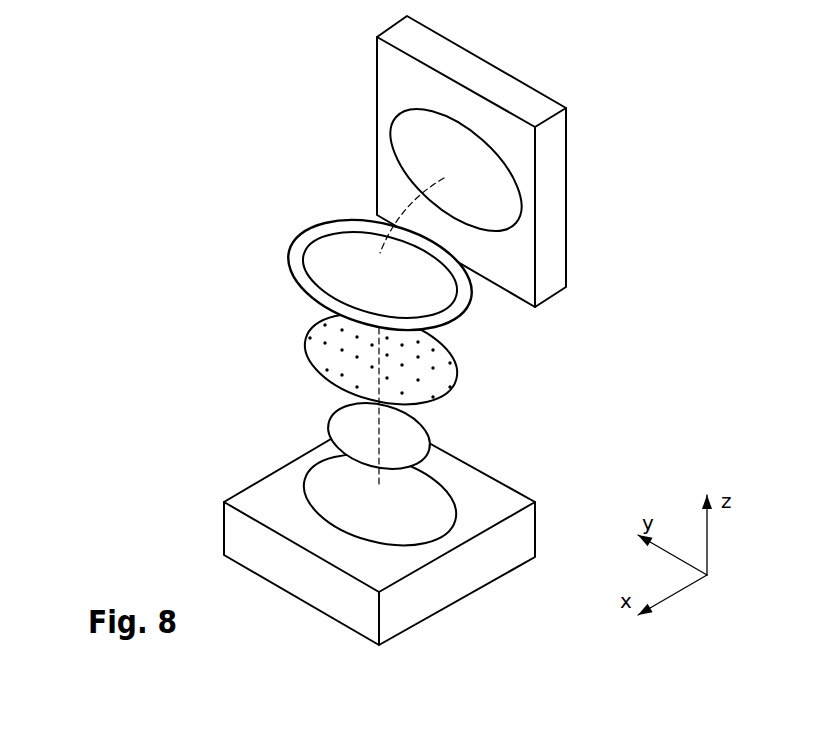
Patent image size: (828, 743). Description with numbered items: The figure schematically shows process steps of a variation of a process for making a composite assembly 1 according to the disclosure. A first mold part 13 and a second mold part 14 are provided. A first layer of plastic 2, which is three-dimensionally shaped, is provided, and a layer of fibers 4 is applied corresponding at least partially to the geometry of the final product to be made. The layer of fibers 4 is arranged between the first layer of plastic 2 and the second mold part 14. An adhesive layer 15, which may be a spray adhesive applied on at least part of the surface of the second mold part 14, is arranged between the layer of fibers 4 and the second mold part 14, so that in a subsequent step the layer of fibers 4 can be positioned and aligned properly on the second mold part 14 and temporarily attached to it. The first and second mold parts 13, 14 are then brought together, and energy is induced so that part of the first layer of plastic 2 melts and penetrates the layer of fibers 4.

The device assembly 1 is at (367, 322).
The first layer of plastic 2 is at (265, 174).
The layer of fibers 4 is at (256, 349).
The first mold part 13 is at (534, 161).
The second mold part 14 is at (287, 529).
The adhesive layer 15 is at (237, 421).